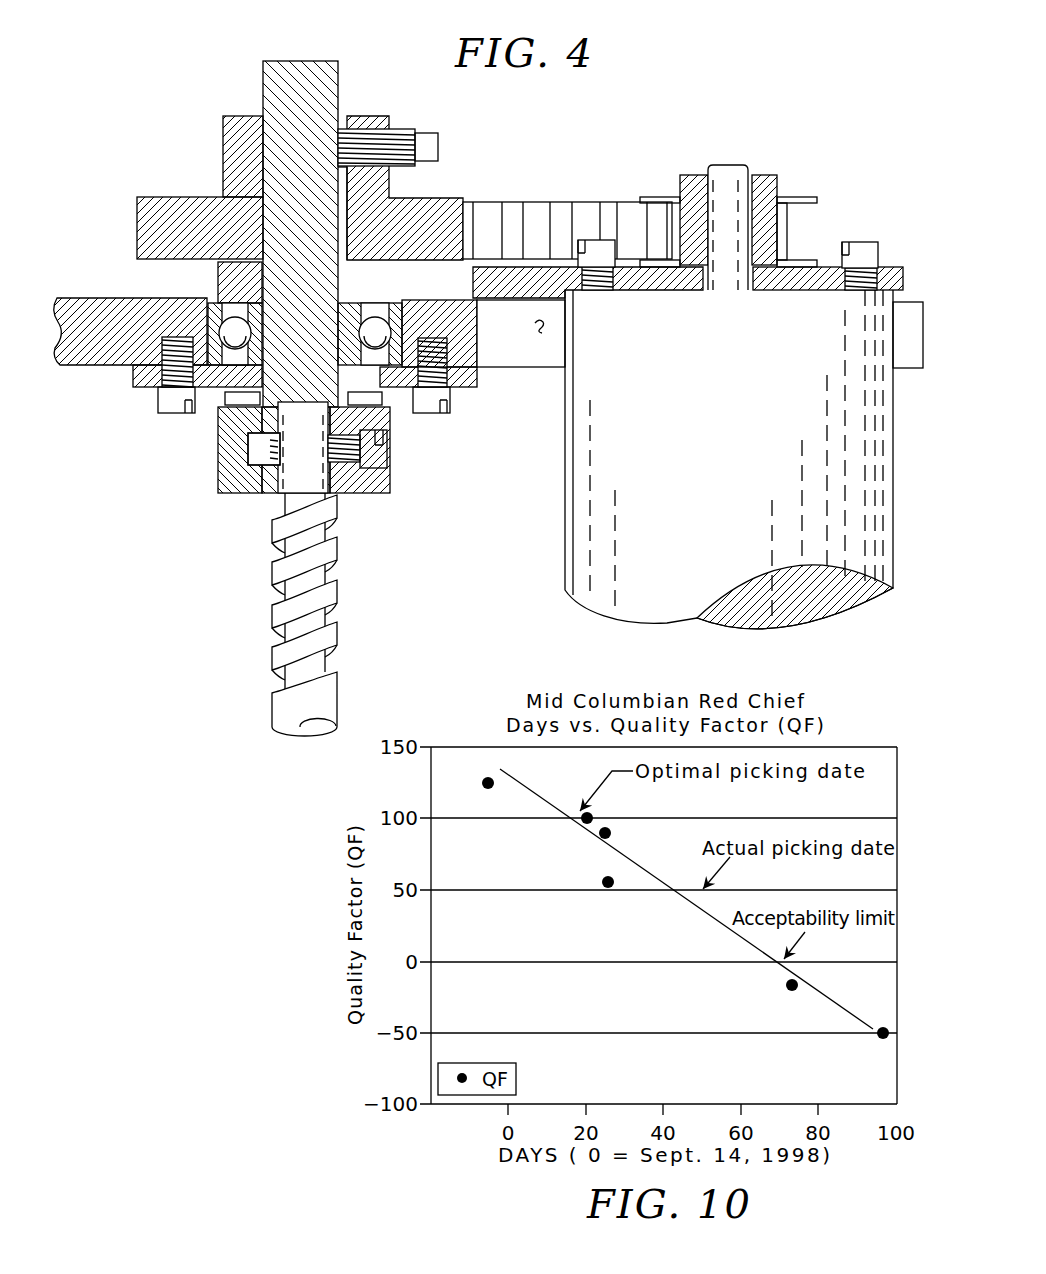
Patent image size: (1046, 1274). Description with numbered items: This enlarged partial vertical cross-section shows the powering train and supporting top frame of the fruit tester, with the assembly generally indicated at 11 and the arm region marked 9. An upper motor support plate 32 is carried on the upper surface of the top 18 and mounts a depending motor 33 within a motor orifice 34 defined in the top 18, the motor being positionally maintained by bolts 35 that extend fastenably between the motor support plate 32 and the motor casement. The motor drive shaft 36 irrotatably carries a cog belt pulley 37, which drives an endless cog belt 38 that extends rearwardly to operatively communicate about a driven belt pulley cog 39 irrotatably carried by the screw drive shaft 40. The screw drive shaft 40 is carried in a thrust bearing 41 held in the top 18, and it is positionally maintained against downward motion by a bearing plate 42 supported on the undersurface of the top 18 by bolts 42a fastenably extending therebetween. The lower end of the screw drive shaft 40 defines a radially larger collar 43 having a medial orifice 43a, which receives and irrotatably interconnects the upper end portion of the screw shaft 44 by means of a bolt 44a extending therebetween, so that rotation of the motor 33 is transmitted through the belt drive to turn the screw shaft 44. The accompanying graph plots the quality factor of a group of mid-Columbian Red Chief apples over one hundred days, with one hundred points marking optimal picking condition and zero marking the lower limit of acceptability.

The arm 9 is at (546, 370).
The picker head assembly 11 is at (530, 193).
The top 18 is at (98, 300).
The upper motor support plate 32 is at (800, 280).
The motor 33 is at (707, 540).
The motor orifice 34 is at (542, 328).
The bolts 35 is at (607, 262).
The motor drive shaft 36 is at (732, 162).
The cog belt pulley 37 is at (818, 195).
The endless cog belt 38 is at (590, 203).
The driven belt pulley cog 39 is at (193, 197).
The screw drive shaft 40 is at (296, 62).
The thrust bearing 41 is at (378, 325).
The bearing plate 42 is at (133, 386).
The bolts 42a is at (178, 413).
The collar 43 is at (217, 455).
The medial orifice 43a is at (277, 480).
The screw shaft 44 is at (270, 617).
The bolt 44a is at (368, 453).